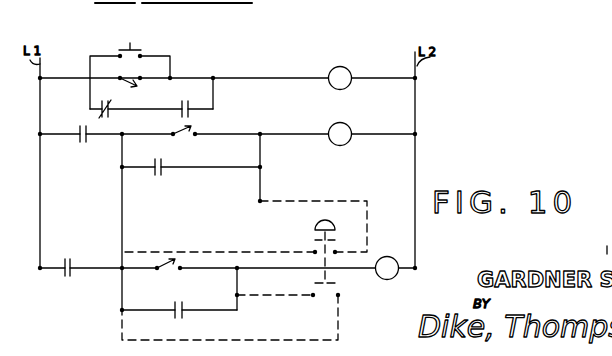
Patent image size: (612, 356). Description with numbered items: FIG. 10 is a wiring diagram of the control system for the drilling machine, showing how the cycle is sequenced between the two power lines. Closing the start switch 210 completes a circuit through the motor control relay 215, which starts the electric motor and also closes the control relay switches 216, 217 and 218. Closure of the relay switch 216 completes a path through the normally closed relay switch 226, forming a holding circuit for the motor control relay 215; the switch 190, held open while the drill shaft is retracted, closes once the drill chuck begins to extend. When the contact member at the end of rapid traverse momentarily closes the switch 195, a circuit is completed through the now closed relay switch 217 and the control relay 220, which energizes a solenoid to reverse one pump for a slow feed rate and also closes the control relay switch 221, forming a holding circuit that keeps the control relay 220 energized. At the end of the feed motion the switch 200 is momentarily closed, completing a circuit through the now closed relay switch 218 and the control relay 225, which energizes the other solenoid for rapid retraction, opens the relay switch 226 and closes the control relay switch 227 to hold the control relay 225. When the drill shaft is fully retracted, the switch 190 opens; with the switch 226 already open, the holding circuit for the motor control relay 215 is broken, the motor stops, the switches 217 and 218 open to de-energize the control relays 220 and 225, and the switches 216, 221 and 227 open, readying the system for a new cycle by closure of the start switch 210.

The start switch 210 is at (128, 46).
The switch 190 is at (136, 87).
The normally closed relay switch 226 is at (99, 111).
The control relay switch 216 is at (192, 114).
The switch 195 is at (195, 127).
The control relay 215 is at (348, 70).
The control relay 220 is at (349, 126).
The control relay switch 217 is at (78, 142).
The control relay switch 221 is at (155, 172).
The control relay switch 218 is at (72, 264).
The switch 200 is at (167, 259).
The control relay switch 227 is at (184, 306).
The control relay 225 is at (384, 257).